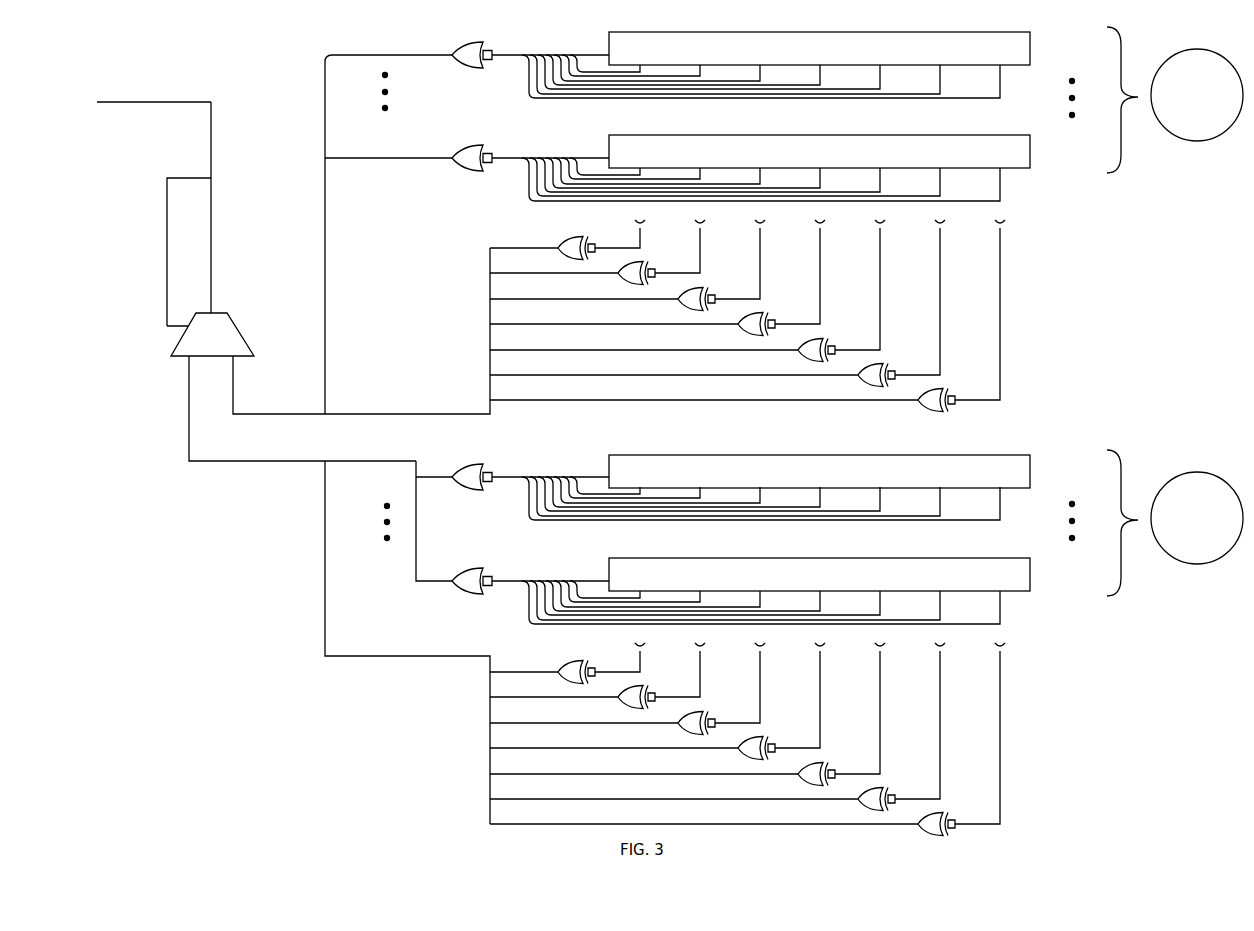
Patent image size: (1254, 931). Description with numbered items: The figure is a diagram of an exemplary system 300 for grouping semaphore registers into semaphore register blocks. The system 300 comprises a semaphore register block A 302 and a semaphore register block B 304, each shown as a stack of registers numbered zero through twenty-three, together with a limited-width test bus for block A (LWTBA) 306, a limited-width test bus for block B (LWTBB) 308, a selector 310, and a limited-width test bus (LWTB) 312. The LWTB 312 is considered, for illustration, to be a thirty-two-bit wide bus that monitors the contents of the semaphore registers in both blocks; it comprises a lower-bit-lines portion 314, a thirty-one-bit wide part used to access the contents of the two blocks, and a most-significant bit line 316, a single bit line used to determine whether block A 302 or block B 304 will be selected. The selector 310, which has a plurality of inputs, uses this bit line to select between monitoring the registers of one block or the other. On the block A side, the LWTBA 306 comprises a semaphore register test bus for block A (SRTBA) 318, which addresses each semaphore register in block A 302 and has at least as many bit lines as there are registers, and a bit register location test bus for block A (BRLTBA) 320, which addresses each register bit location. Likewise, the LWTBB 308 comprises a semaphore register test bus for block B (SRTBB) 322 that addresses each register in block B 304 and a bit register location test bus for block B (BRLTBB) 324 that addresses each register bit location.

The system 300 is at (670, 431).
The semaphore register block A 302 is at (1171, 130).
The semaphore register block B 304 is at (1171, 553).
The limited-width test bus for block A (LWTBA) 306 is at (315, 408).
The limited-width test bus for block B (LWTBB) 308 is at (230, 452).
The selector 310 is at (238, 329).
The limited-width test bus (LWTB) 312 is at (190, 95).
The LWTB[30:0] 314 is at (248, 253).
The LWTB[31] 316 is at (155, 207).
The semaphore register test bus for block A (SRTBA) 318 is at (361, 297).
The bit register location test bus for block A (BRLTBA) 320 is at (414, 382).
The semaphore register test bus for block B (SRTBB) 322 is at (328, 453).
The bit register location test bus for block B (BRLTBB) 324 is at (363, 653).